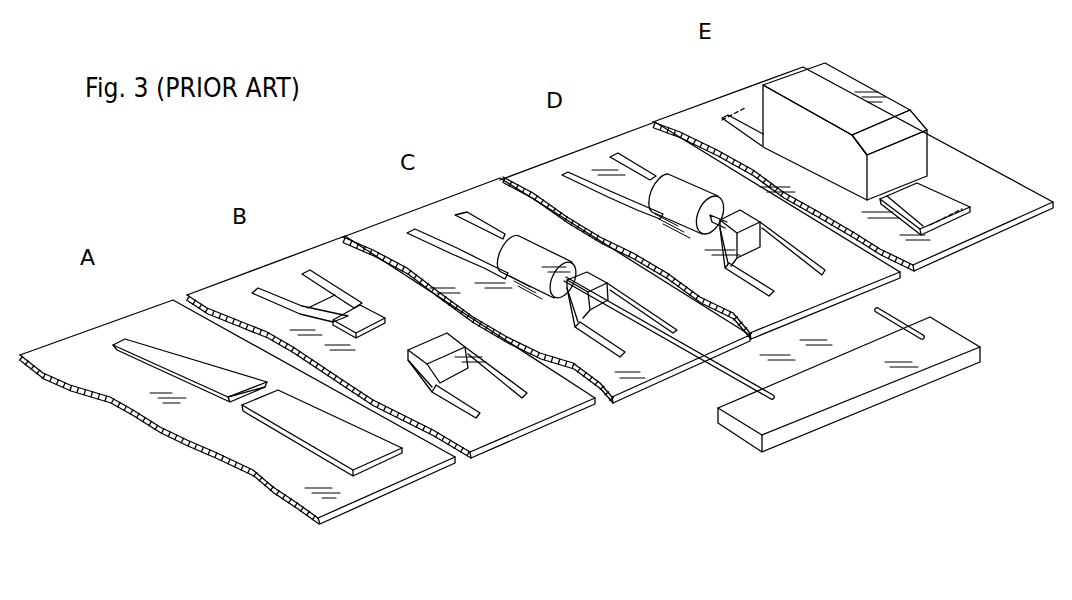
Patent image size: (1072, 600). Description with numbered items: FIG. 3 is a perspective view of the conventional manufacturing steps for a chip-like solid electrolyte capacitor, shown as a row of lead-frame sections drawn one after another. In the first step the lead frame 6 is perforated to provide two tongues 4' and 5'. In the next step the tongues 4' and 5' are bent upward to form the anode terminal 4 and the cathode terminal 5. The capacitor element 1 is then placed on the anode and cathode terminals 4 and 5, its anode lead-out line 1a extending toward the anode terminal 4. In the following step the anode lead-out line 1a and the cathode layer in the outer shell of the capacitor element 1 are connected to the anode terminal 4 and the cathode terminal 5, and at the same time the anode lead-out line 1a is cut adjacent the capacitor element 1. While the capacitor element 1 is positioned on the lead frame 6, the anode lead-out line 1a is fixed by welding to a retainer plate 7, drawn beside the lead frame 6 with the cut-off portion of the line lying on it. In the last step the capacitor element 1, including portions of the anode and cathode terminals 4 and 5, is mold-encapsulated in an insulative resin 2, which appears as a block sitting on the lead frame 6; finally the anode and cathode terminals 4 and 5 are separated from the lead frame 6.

The capacitor element 1 is at (675, 193).
The anode lead-out line 1a is at (745, 379).
The insulative resin 2 is at (862, 97).
The anode terminal 4 is at (704, 323).
The tongue 4' is at (321, 466).
The cathode terminal 5 is at (508, 186).
The tongue 5' is at (146, 376).
The lead frame 6 is at (1023, 250).
The retainer plate 7 is at (955, 338).